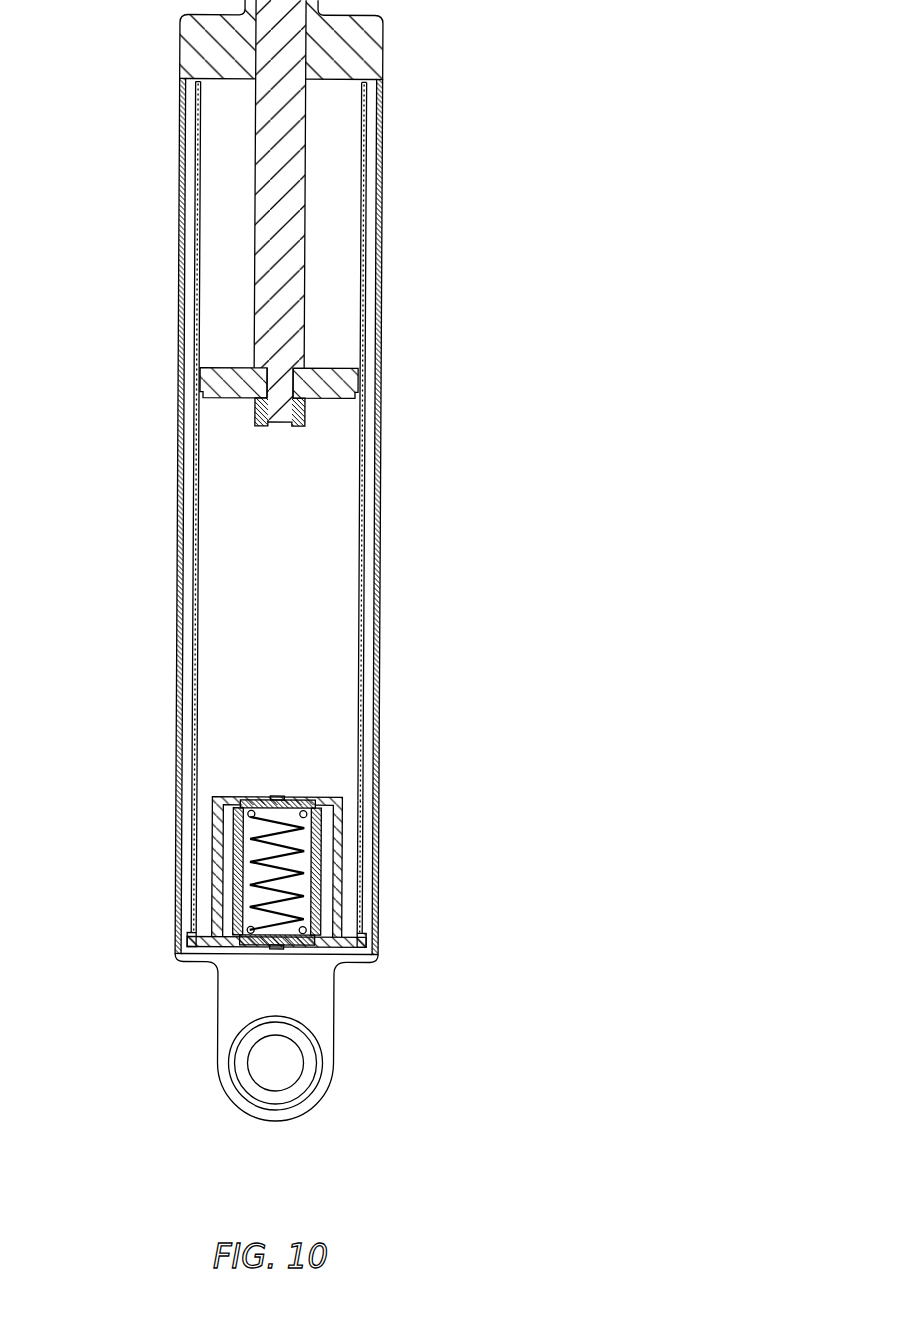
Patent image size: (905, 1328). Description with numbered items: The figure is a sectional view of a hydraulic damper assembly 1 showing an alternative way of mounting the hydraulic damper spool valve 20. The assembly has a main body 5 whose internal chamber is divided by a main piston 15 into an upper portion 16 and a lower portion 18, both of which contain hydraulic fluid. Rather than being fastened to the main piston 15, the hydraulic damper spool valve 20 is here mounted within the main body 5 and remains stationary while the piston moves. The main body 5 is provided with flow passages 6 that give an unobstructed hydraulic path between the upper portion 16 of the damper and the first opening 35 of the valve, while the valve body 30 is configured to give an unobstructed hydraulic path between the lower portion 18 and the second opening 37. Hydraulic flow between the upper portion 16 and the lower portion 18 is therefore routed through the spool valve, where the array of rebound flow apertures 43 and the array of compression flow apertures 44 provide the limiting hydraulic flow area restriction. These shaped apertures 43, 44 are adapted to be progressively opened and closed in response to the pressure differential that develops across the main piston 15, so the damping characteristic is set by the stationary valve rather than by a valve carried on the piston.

The hydraulic damper assembly 1 is at (397, 491).
The main body 5 is at (377, 930).
The flow passages 6 is at (370, 275).
The main piston 15 is at (345, 385).
The upper portion 16 is at (343, 197).
The lower portion 18 is at (337, 623).
The hydraulic damper spool valve 20 is at (344, 884).
The valve body 30 is at (342, 825).
The first opening 35 is at (257, 946).
The second opening 37 is at (260, 797).
The array of rebound flow apertures 43 is at (237, 928).
The array of compression flow apertures 44 is at (235, 820).